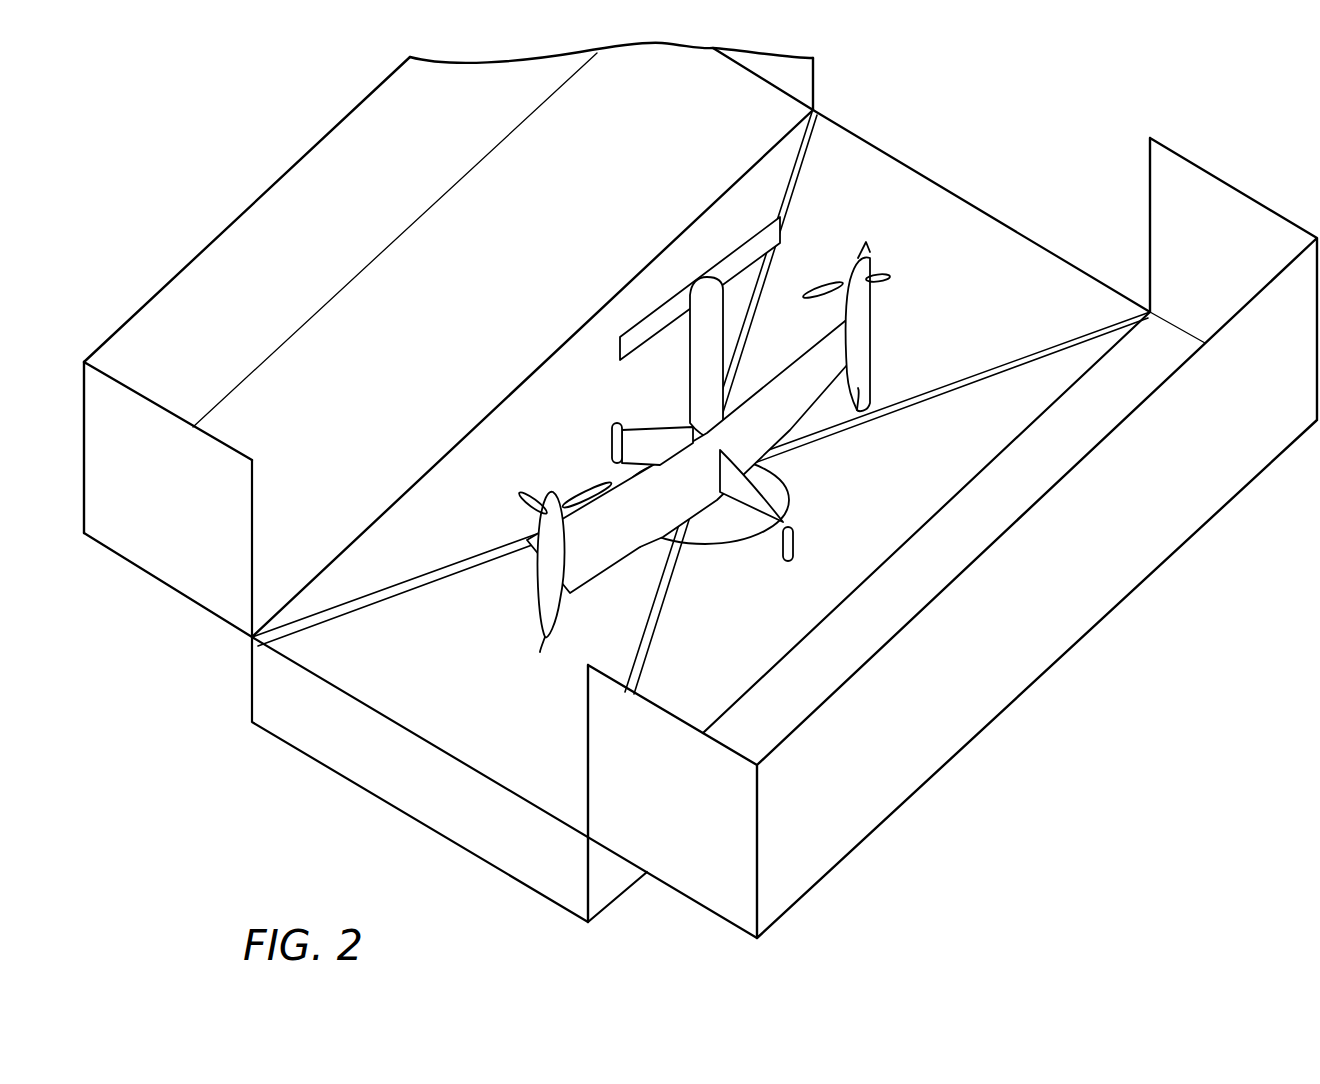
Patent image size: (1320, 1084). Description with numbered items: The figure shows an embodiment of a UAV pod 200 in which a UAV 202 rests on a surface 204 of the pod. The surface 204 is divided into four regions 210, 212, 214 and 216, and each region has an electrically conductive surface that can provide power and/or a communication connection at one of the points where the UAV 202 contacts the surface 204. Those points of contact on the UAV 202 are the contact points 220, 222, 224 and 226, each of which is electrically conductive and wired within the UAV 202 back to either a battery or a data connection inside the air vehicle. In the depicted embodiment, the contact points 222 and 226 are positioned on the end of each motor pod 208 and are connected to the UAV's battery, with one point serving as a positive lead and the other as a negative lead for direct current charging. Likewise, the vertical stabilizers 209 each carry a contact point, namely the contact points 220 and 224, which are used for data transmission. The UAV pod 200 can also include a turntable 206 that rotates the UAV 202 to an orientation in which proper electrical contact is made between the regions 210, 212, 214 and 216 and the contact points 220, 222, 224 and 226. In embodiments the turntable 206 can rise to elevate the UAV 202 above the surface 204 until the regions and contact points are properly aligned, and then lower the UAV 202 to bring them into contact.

The UAV pod 200 is at (700, 490).
The UAV 202 is at (712, 438).
The surface 204 is at (1012, 272).
The turntable 206 is at (722, 530).
The motor pod 208 is at (868, 328).
The vertical stabilizer 209 is at (660, 443).
The region 210 is at (787, 500).
The region 212 is at (855, 165).
The region 214 is at (310, 605).
The region 216 is at (395, 703).
The contact point 220 is at (787, 560).
The contact point 222 is at (852, 395).
The contact point 224 is at (606, 462).
The contact point 226 is at (540, 640).